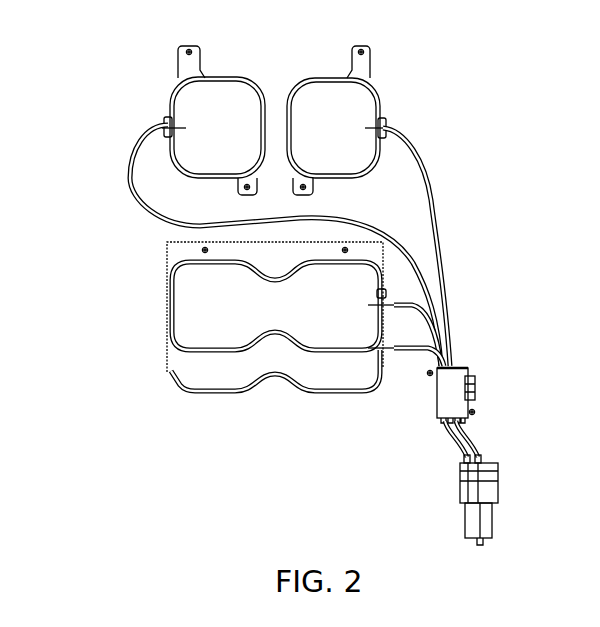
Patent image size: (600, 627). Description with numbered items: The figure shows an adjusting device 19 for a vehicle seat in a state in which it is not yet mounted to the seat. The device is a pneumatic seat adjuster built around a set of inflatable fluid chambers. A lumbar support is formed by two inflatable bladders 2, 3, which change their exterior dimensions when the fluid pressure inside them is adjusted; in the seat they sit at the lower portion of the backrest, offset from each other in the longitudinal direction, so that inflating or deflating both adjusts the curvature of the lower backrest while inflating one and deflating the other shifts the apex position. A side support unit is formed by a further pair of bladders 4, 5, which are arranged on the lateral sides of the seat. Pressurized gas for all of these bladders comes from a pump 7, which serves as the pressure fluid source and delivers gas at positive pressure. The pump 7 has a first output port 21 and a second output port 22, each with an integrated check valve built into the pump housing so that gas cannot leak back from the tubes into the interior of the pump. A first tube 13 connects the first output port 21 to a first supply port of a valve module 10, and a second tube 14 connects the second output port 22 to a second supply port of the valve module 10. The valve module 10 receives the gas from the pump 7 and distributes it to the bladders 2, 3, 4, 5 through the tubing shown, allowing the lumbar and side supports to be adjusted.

The adjusting device 19 is at (76, 82).
The inflatable bladder 2 is at (170, 302).
The inflatable bladder 3 is at (170, 370).
The bladder 4 is at (175, 105).
The bladder 5 is at (378, 102).
The valve module 10 is at (465, 368).
The first tube 13 is at (458, 428).
The second tube 14 is at (443, 432).
The first output port 21 is at (478, 458).
The second output port 22 is at (467, 458).
The pump 7 is at (477, 496).